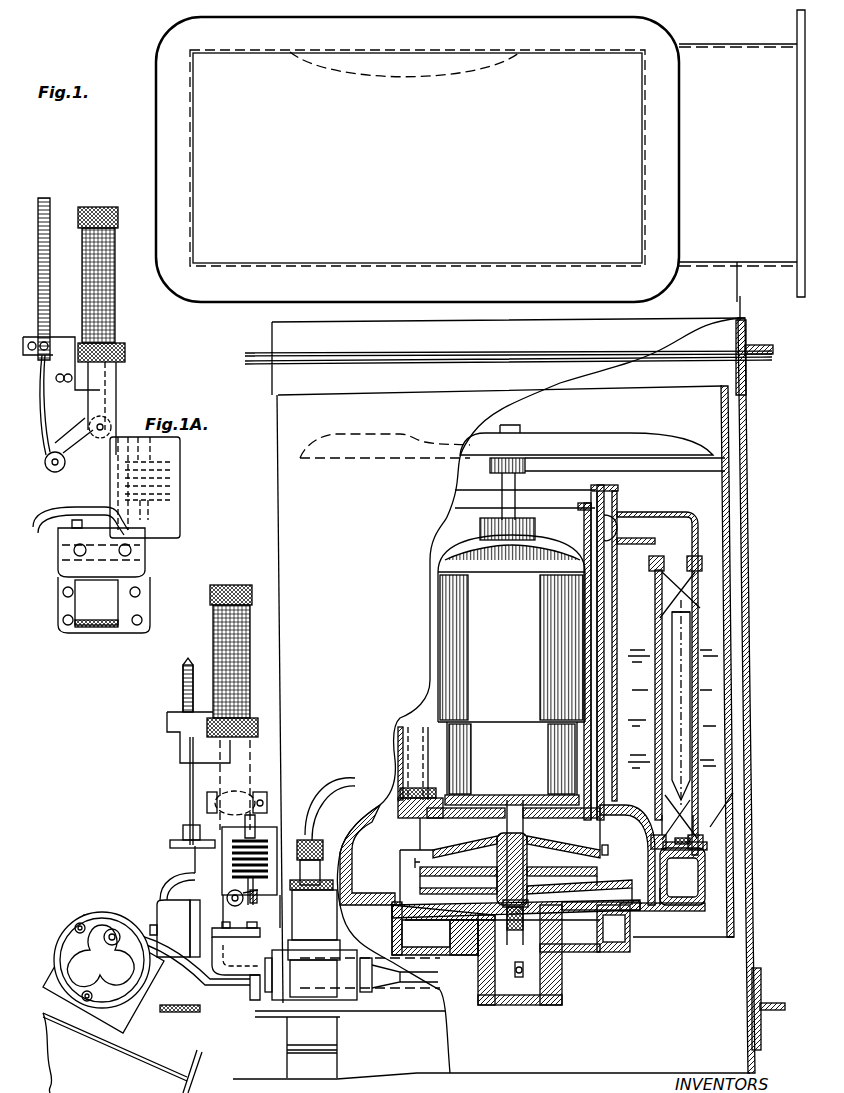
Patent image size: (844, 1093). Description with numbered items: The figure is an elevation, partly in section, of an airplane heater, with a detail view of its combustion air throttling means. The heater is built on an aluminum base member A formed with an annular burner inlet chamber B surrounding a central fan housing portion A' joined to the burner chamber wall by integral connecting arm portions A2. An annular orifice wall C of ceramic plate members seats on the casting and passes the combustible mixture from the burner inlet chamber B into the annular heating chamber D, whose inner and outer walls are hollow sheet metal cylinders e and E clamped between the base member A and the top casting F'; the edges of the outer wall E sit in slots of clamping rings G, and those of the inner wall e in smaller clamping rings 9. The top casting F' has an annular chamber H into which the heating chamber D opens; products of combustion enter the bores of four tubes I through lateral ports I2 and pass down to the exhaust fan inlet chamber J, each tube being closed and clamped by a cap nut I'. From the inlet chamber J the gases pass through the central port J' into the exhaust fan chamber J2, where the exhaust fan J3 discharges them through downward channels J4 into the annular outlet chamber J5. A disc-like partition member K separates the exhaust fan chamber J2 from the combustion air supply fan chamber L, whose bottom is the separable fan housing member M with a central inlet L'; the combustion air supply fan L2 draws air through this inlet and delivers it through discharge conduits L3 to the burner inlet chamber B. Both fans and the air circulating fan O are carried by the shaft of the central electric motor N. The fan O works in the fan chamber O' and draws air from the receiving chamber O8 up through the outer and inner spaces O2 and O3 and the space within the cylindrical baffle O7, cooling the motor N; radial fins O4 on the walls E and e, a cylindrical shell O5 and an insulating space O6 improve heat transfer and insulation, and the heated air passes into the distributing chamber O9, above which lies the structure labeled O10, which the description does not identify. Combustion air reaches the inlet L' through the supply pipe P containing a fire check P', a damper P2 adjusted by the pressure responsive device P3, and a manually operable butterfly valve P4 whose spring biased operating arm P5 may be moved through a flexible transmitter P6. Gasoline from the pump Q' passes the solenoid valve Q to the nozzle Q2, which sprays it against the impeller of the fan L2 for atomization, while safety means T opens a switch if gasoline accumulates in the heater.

In FIG. 1, the cover O10 is at (805, 114).
In FIG. 1, the distributing chamber O9 is at (742, 156).
In FIG. 1, the fan chamber O' is at (710, 684).
In FIG. 1, the air circulating fan O is at (512, 455).
In FIG. 1, the electric motor N is at (517, 648).
In FIG. 1, the tubes I is at (521, 652).
In FIG. 1, the cap nut I' is at (622, 507).
In FIG. 1, the lateral port I2 is at (612, 525).
In FIG. 1, the top casting F' is at (696, 679).
In FIG. 1, the annular chamber H is at (647, 531).
In FIG. 1, the clamping rings 9 is at (650, 574).
In FIG. 1, the clamping rings G is at (702, 570).
In FIG. 1, the outer wall E is at (696, 710).
In FIG. 1, the inner wall e is at (660, 716).
In FIG. 1, the radial fins O4 is at (648, 605).
In FIG. 1, the insulating space O6 is at (735, 590).
In FIG. 1, the cylindrical shell O5 is at (733, 626).
In FIG. 1, the outer space O2 is at (720, 686).
In FIG. 1, the inner space O3 is at (640, 694).
In FIG. 1, the cylindrical baffle O7 is at (720, 660).
In FIG. 1, the base member A is at (584, 863).
In FIG. 1, the connecting arm portions A2 is at (397, 825).
In FIG. 1, the fan housing portion A' is at (618, 855).
In FIG. 1, the burner inlet chamber B is at (528, 876).
In FIG. 1, the heating chamber D is at (677, 825).
In FIG. 1, the orifice wall C is at (691, 854).
In FIG. 1, the partition member K is at (455, 865).
In FIG. 1, the exhaust fan inlet chamber J is at (508, 817).
In FIG. 1, the central port J' is at (526, 818).
In FIG. 1, the exhaust fan chamber J2 is at (490, 830).
In FIG. 1, the exhaust fan J3 is at (465, 830).
In FIG. 1, the channels J4 is at (440, 920).
In FIG. 1, the annular outlet chamber J5 is at (452, 985).
In FIG. 1, the combustion air supply fan chamber L is at (496, 938).
In FIG. 1, the central inlet L' is at (520, 972).
In FIG. 1, the combustion air supply fan L2 is at (561, 896).
In FIG. 1, the discharge conduits L3 is at (646, 895).
In FIG. 1, the fan housing member M is at (575, 925).
In FIG. 1, the solenoid valve Q is at (275, 965).
In FIG. 1, the pump Q' is at (120, 1002).
In FIG. 1, the nozzle Q2 is at (525, 960).
In FIG. 1, the supply pipe P is at (365, 1034).
In FIG. 1, the fire check P' is at (221, 707).
In FIG. 1A, the fire check P' is at (74, 326).
In FIG. 1, the damper P2 is at (250, 905).
In FIG. 1A, the damper P2 is at (72, 550).
In FIG. 1, the pressure responsive device P3 is at (290, 840).
In FIG. 1A, the pressure responsive device P3 is at (165, 490).
In FIG. 1, the manually operable butterfly valve P4 is at (246, 792).
In FIG. 1A, the manually operable butterfly valve P4 is at (106, 423).
In FIG. 1, the operating arm P5 is at (207, 792).
In FIG. 1A, the operating arm P5 is at (73, 430).
In FIG. 1, the flexible transmitter P6 is at (190, 814).
In FIG. 1A, the flexible transmitter P6 is at (45, 425).
In FIG. 1, the safety means T is at (175, 929).
In FIG. 1A, the safety means T is at (145, 555).
In FIG. 1, the receiving chamber O8 is at (240, 1079).